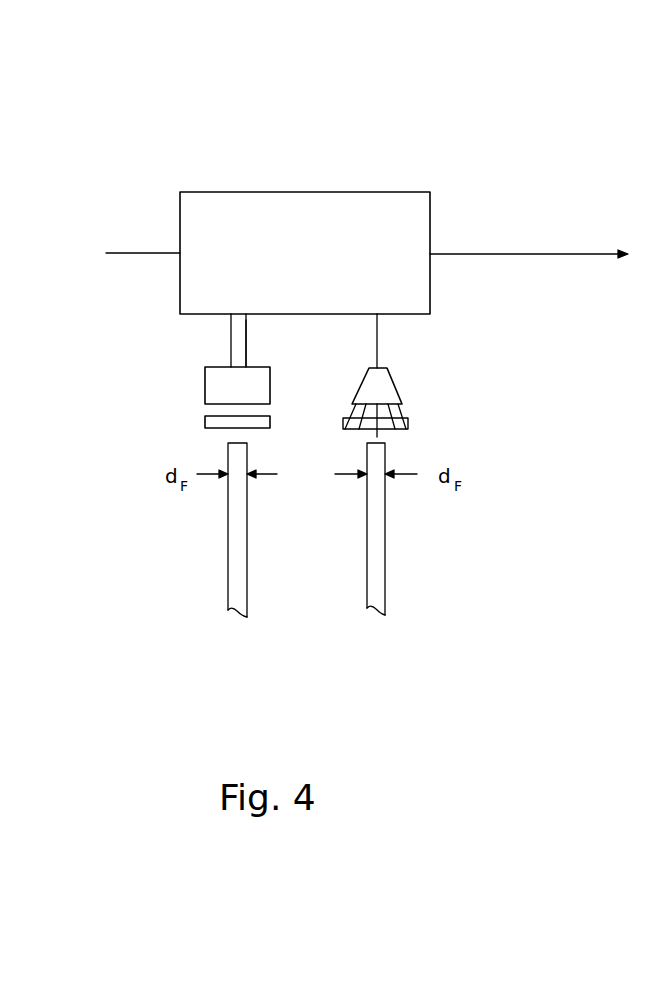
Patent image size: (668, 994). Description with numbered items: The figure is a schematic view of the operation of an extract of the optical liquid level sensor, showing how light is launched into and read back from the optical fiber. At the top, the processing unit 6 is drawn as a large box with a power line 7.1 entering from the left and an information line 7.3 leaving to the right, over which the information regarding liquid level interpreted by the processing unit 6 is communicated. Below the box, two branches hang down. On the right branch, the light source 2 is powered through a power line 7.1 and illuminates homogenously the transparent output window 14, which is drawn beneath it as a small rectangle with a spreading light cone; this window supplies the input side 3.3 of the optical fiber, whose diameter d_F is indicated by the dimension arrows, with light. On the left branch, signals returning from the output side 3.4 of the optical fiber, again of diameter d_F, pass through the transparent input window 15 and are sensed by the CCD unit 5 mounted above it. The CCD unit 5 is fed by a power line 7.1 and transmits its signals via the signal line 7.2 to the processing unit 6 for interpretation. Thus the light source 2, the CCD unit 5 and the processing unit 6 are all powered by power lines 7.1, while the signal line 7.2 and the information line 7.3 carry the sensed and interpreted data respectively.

The processing unit 6 is at (332, 203).
The power lines 7.1 is at (140, 252).
The signal line 7.2 is at (247, 341).
The information line 7.3 is at (565, 257).
The CCD unit 5 is at (222, 388).
The transparent input window 15 is at (220, 422).
The light source 2 is at (386, 388).
The transparent output window 14 is at (399, 423).
The output side of the optical fiber 3.4 is at (237, 542).
The input side of the optical fiber 3.3 is at (373, 520).